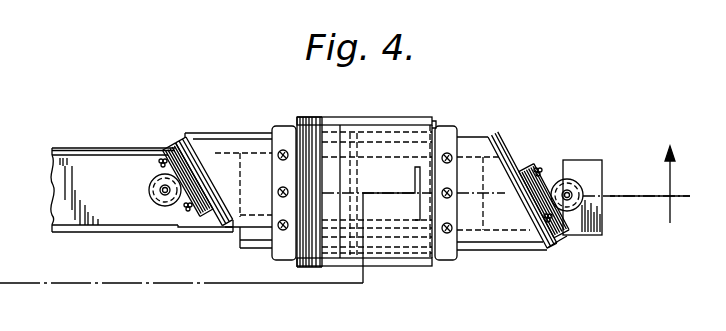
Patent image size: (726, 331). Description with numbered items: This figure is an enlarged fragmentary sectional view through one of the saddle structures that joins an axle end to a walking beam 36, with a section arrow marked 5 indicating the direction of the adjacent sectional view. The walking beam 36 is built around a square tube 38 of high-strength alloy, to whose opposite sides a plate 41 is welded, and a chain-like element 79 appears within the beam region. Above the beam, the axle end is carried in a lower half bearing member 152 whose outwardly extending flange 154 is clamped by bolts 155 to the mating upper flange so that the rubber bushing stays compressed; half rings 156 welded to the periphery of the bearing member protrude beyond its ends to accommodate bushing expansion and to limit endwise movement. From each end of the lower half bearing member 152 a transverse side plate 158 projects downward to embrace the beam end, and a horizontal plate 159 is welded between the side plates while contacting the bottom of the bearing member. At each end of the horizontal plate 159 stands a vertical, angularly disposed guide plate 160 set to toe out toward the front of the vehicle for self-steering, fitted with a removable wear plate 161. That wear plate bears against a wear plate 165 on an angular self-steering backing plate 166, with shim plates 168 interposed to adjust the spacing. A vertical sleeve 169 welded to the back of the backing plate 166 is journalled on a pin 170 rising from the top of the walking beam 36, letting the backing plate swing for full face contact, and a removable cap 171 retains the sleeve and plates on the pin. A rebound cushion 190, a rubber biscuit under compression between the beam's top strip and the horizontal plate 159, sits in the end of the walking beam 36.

The walking beam 36 is at (113, 125).
The square tube 38 is at (54, 195).
The plate 41 is at (82, 148).
The drive chain 79 is at (56, 162).
The lower half bearing member 152 is at (348, 150).
The flange 154 is at (278, 128).
The bolt 155 is at (278, 226).
The half ring 156 is at (402, 117).
The side plate 158 is at (237, 134).
The horizontal plate 159 is at (505, 252).
The guide plate 160 is at (215, 123).
The wear plate 161 is at (172, 142).
The wear plate 165 is at (210, 218).
The self-steering backing plate 166 is at (160, 170).
The shim plate 168 is at (168, 146).
The vertical sleeve 169 is at (158, 185).
The pin 170 is at (162, 191).
The removable cap 171 is at (152, 204).
The rebound cushion 190 is at (404, 180).
The section view arrow 5 is at (650, 185).